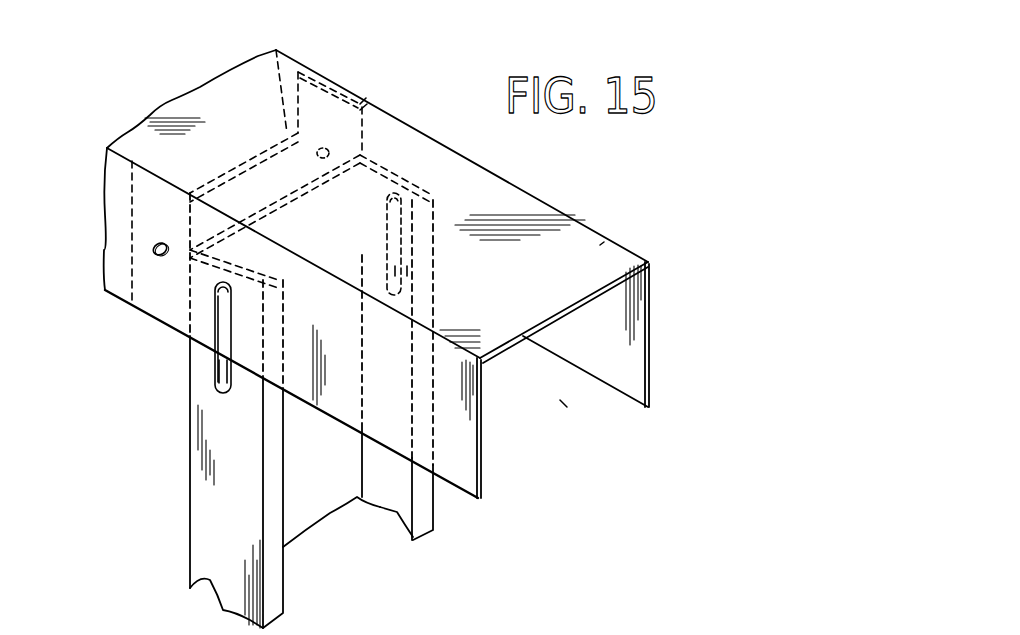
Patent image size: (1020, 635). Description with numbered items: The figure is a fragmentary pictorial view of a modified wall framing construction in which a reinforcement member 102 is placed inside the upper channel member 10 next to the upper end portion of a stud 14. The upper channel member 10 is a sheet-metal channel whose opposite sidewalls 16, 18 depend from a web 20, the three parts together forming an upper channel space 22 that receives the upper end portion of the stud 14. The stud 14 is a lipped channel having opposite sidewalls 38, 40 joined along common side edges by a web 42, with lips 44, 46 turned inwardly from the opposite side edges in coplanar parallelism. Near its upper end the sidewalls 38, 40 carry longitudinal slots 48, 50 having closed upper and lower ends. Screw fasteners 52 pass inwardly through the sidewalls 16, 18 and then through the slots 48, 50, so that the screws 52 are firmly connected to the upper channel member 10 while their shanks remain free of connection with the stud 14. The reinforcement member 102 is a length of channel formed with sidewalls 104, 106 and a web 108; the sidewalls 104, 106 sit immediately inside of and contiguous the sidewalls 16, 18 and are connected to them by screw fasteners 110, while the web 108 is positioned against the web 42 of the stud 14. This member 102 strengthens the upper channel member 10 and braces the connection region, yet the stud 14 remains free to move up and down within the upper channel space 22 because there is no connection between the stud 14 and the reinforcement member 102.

The upper channel member 10 is at (506, 207).
The stud 14 is at (310, 410).
The sidewall 16 is at (468, 447).
The sidewall 18 is at (637, 357).
The web 20 is at (598, 248).
The upper channel space 22 is at (567, 407).
The sidewall 38 is at (212, 577).
The sidewall 40 is at (395, 512).
The web 42 is at (340, 512).
The lip 44 is at (285, 598).
The lip 46 is at (433, 517).
The longitudinal slot 48 is at (217, 375).
The longitudinal slot 50 is at (387, 270).
The screw fastener 52 is at (217, 293).
The reinforcement member 102 is at (245, 122).
The sidewall 104 is at (145, 203).
The sidewall 106 is at (330, 92).
The web 108 is at (378, 112).
The screw fastener 110 is at (153, 257).